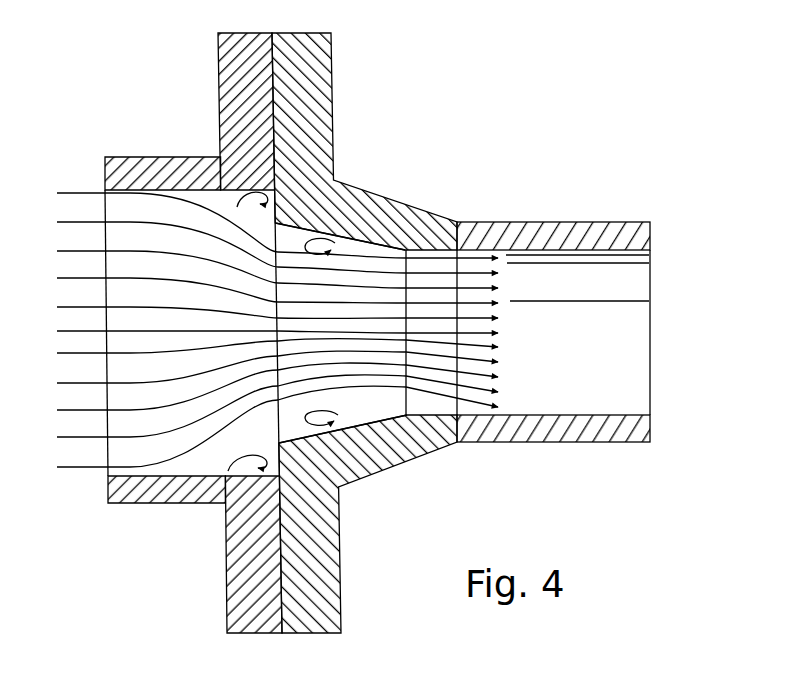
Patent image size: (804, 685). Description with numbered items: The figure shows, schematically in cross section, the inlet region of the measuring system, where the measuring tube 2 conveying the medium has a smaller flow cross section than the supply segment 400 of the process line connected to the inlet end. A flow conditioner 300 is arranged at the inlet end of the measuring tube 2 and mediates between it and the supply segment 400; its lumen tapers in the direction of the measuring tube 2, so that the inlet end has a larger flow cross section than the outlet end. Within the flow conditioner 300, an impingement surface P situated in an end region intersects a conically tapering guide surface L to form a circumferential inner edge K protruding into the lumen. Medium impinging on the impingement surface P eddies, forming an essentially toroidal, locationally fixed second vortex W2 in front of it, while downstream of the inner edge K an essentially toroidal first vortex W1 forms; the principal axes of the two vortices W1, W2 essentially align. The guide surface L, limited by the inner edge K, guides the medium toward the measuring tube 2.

The supply segment 400 is at (135, 173).
The flow conditioner 300 is at (343, 212).
The measuring tube 2 is at (565, 443).
The impingement surface P is at (266, 216).
The inner edge K is at (266, 230).
The second vortex W2 is at (192, 530).
The first vortex W1 is at (368, 505).
The guide surface L is at (390, 233).